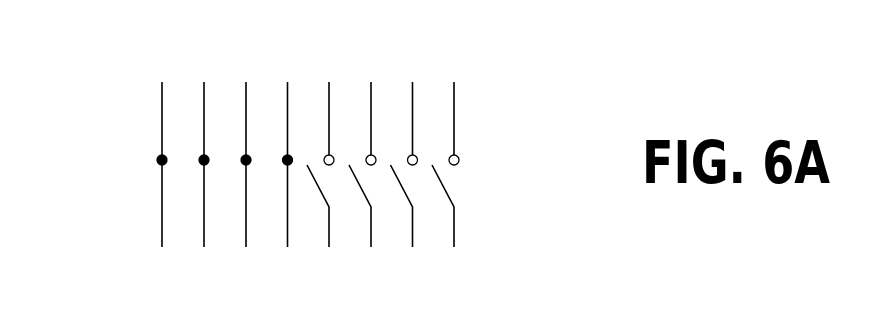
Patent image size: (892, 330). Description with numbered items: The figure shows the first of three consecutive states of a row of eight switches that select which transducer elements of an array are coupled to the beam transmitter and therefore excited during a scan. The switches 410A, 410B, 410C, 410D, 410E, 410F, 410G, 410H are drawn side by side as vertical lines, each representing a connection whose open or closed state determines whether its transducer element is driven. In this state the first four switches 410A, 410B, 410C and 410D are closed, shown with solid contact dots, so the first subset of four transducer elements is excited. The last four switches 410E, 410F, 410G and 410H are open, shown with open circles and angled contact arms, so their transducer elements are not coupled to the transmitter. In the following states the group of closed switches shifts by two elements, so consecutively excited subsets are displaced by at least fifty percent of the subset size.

The switch 410A is at (162, 118).
The switch 410B is at (204, 92).
The switch 410C is at (246, 95).
The switch 410D is at (288, 94).
The switch 410E is at (329, 95).
The switch 410F is at (371, 212).
The switch 410G is at (412, 218).
The switch 410H is at (454, 100).